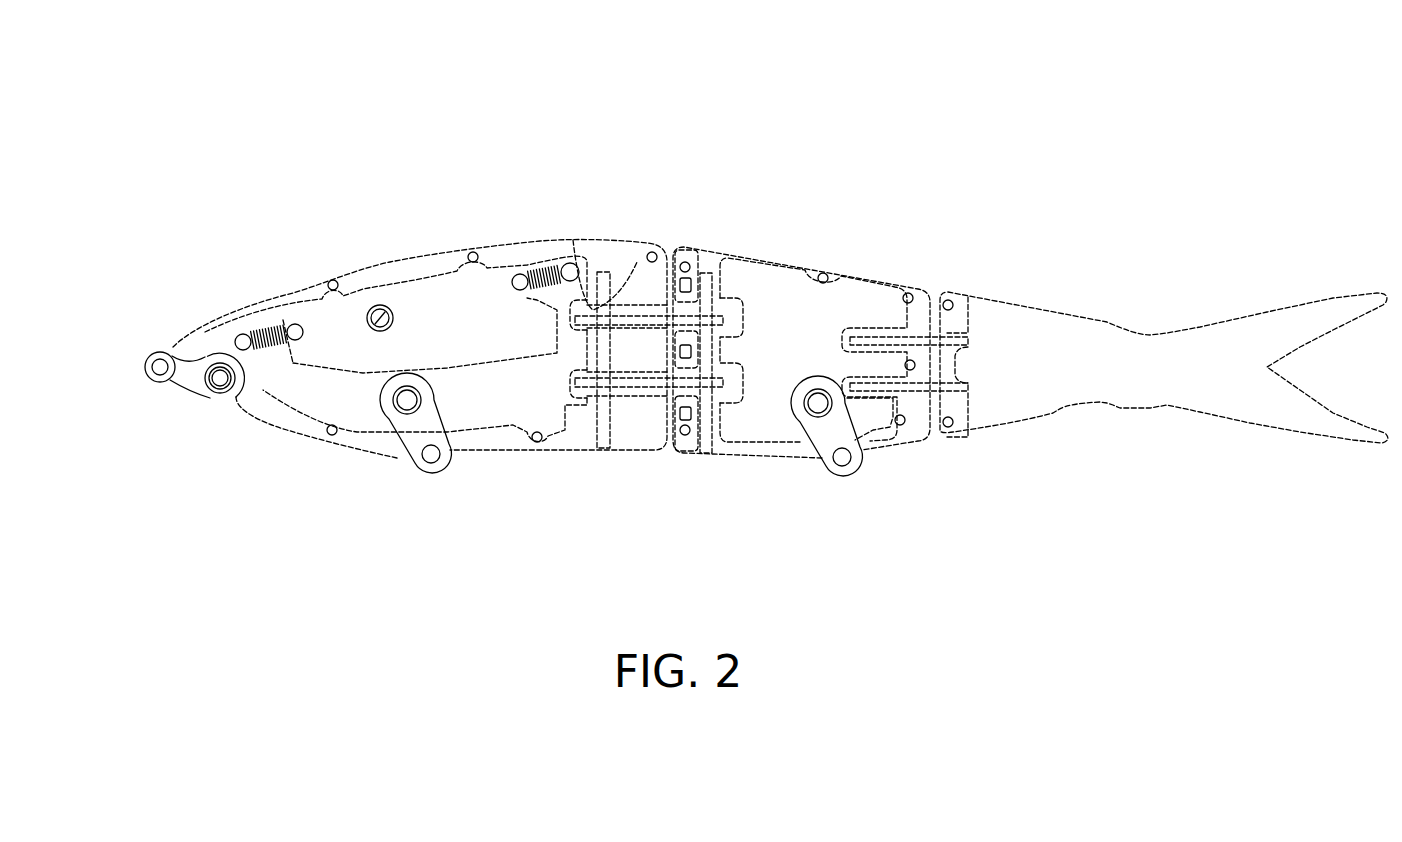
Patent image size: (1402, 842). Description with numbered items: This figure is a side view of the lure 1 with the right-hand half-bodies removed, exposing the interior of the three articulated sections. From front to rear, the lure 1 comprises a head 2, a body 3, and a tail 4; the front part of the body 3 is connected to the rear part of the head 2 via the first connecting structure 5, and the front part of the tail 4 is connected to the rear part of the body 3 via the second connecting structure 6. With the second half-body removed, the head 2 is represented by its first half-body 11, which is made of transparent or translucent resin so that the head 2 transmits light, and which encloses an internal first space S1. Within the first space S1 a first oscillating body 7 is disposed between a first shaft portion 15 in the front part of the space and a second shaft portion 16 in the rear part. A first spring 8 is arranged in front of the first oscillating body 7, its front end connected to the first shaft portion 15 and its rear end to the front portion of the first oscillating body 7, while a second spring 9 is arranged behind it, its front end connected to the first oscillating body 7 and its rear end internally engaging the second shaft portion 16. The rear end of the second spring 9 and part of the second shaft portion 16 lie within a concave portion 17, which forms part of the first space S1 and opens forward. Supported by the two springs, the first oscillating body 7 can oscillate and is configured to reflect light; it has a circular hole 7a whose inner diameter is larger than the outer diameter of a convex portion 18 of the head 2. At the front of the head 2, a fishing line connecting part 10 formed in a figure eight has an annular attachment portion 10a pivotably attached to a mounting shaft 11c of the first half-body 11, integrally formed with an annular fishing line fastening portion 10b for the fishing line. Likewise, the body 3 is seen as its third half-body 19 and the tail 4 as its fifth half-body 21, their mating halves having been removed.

The lure 1 is at (968, 128).
The head 2 is at (384, 200).
The body 3 is at (748, 212).
The tail 4 is at (1080, 255).
The first connecting structure 5 is at (635, 400).
The second connecting structure 6 is at (920, 400).
The first oscillating body 7 is at (350, 352).
The hole 7a is at (372, 350).
The first spring 8 is at (280, 350).
The second spring 9 is at (536, 268).
The fishing line connecting part 10 is at (150, 356).
The attachment portion 10a is at (220, 357).
The fishing line fastening portion 10b is at (160, 378).
The first half-body 11 is at (458, 248).
The mounting shaft 11c is at (222, 383).
The first shaft portion 15 is at (236, 335).
The second shaft portion 16 is at (637, 262).
The concave portion 17 is at (572, 260).
The convex portion 18 is at (376, 308).
The third half-body 19 is at (825, 268).
The fifth half-body 21 is at (1113, 321).
The first space S1 is at (495, 405).